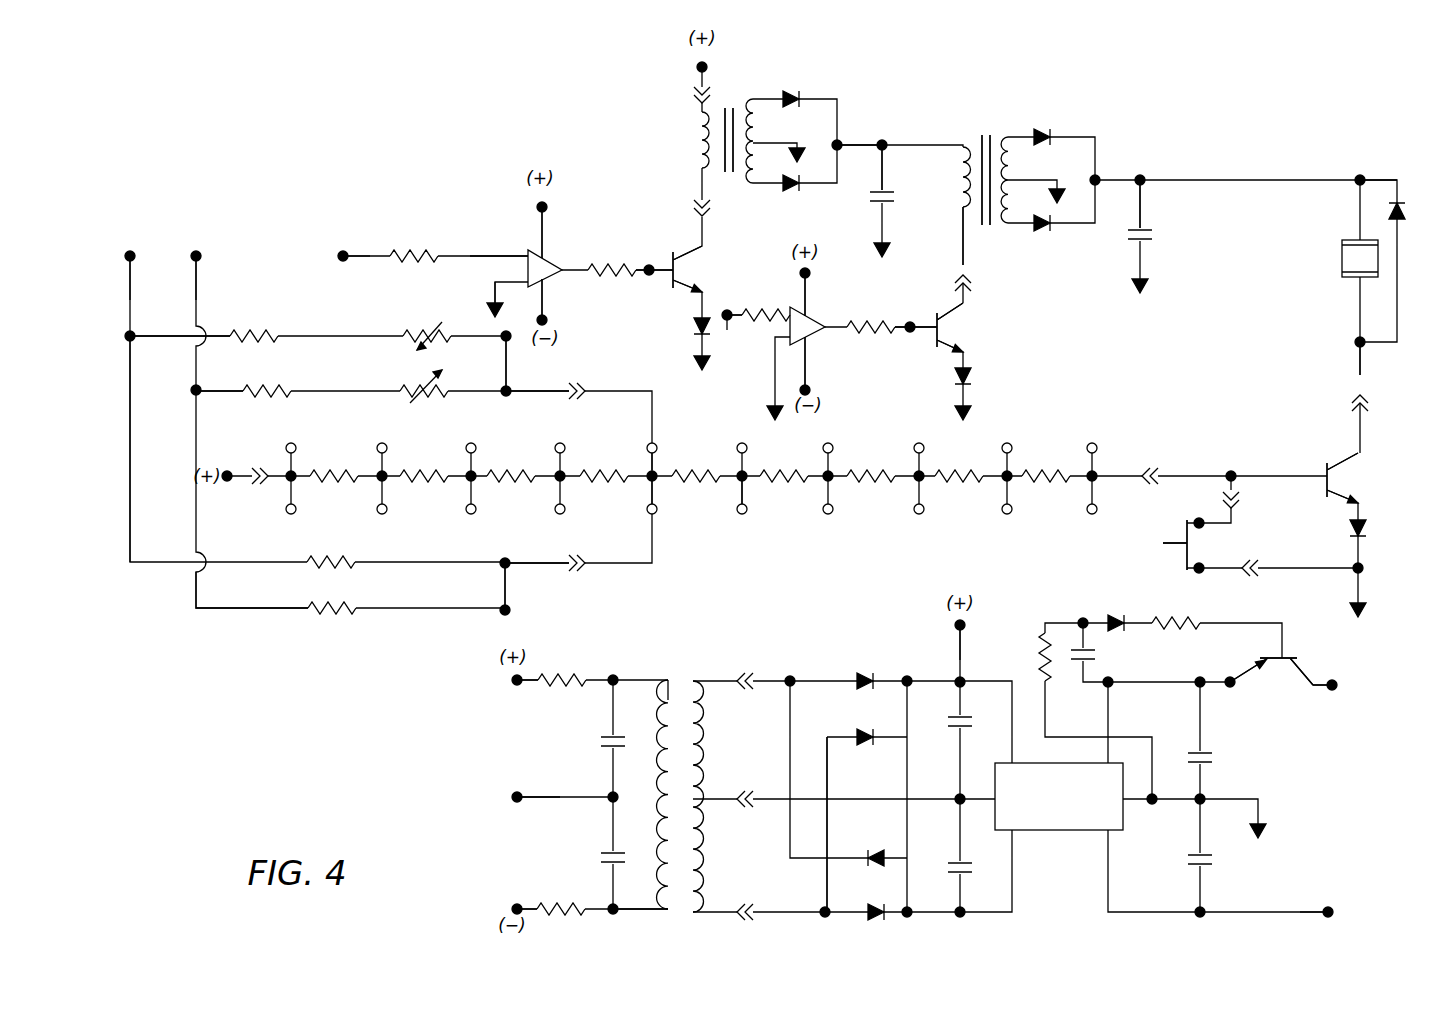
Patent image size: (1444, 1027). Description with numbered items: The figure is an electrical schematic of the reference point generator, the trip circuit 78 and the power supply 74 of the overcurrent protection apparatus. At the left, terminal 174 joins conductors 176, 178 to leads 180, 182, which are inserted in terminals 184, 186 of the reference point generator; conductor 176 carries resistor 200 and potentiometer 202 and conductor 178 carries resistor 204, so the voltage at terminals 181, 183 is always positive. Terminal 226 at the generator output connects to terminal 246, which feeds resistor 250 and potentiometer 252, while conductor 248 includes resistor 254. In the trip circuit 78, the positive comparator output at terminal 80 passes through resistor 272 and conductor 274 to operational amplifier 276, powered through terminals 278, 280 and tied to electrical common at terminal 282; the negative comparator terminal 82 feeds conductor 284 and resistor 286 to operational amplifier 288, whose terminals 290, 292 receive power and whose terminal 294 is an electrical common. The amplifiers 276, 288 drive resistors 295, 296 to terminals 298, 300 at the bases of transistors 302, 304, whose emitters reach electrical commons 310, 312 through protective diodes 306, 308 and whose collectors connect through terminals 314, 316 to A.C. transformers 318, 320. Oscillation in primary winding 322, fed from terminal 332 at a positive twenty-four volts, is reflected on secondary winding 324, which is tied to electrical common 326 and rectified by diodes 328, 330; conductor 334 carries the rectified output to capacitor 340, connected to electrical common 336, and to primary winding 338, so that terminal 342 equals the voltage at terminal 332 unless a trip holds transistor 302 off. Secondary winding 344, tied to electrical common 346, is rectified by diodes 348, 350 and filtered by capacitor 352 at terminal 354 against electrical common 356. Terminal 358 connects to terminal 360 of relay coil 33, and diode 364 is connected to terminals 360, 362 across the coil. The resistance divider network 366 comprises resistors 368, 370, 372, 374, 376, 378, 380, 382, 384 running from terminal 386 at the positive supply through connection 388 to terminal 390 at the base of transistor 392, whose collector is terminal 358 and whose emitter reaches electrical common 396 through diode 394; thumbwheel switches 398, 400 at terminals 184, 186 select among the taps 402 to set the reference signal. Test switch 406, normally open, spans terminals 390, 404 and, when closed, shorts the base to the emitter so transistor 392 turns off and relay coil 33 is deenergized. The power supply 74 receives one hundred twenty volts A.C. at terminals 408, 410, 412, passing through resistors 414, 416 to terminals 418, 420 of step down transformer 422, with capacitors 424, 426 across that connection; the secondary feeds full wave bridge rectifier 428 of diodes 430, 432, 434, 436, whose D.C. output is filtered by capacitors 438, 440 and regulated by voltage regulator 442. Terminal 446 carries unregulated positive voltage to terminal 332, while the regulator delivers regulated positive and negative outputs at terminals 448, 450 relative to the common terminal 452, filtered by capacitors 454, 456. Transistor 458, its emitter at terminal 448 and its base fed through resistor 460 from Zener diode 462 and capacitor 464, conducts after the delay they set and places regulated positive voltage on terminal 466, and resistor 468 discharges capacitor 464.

The relay coil 33 is at (1342, 254).
The power supply 74 is at (494, 722).
The trip circuit 78 is at (1112, 140).
The output terminal 80 is at (343, 250).
The terminal 82 is at (726, 305).
The terminal 174 is at (130, 251).
The conductor 176 is at (170, 336).
The conductor 178 is at (130, 382).
The lead 180 is at (540, 391).
The terminal 181 is at (504, 338).
The lead 182 is at (545, 572).
The terminal 183 is at (498, 615).
The terminal 184 is at (585, 385).
The terminal 186 is at (572, 555).
The resistor 200 is at (255, 330).
The potentiometer 202 is at (415, 330).
The resistor 204 is at (335, 560).
The terminal 226 is at (196, 251).
The terminal 246 is at (200, 388).
The conductor 248 is at (255, 607).
The resistor 250 is at (270, 385).
The potentiometer 252 is at (410, 395).
The resistor 254 is at (340, 612).
The resistor 272 is at (411, 250).
The conductor 274 is at (497, 256).
The operational amplifier 276 is at (545, 265).
The terminal 278 is at (545, 203).
The terminal 280 is at (548, 320).
The terminal 282 is at (493, 290).
The conductor 284 is at (732, 320).
The resistor 286 is at (760, 305).
The operational amplifier 288 is at (815, 320).
The terminal 290 is at (795, 270).
The terminal 292 is at (812, 390).
The terminal 294 is at (770, 415).
The resistor 295 is at (630, 278).
The resistor 296 is at (866, 330).
The terminal 298 is at (648, 262).
The terminal 300 is at (910, 322).
The transistor 302 is at (672, 287).
The transistor 304 is at (930, 328).
The diode 306 is at (695, 325).
The diode 308 is at (970, 372).
The electrical common 310 is at (695, 358).
The electrical common 312 is at (975, 403).
The terminal 314 is at (695, 205).
The terminal 316 is at (970, 275).
The A.C. transformer 318 is at (738, 180).
The A.C. transformer 320 is at (1000, 215).
The primary winding 322 is at (700, 135).
The secondary winding 324 is at (755, 100).
The electrical common 326 is at (798, 148).
The diode 328 is at (795, 185).
The diode 330 is at (795, 95).
The terminal 332 is at (695, 66).
The conductor 334 is at (862, 140).
The electrical common 336 is at (890, 255).
The primary winding 338 is at (960, 172).
The capacitor 340 is at (890, 212).
The terminal 342 is at (884, 140).
The secondary winding 344 is at (1008, 140).
The electrical common 346 is at (1057, 185).
The diode 348 is at (1043, 130).
The diode 350 is at (1045, 228).
The capacitor 352 is at (1150, 232).
The terminal 354 is at (1142, 172).
The electrical common 356 is at (1150, 289).
The terminal 358 is at (1350, 390).
The terminal 360 is at (1353, 342).
The terminal 362 is at (1360, 172).
The diode 364 is at (1398, 200).
The resistance divider network 366 is at (770, 505).
The resistor 368 is at (334, 470).
The resistor 370 is at (428, 466).
The resistor 372 is at (512, 466).
The resistor 374 is at (610, 466).
The resistor 376 is at (702, 466).
The resistor 378 is at (790, 468).
The resistor 380 is at (868, 468).
The resistor 382 is at (960, 466).
The resistor 384 is at (1048, 466).
The terminal 386 is at (229, 470).
The connection 388 is at (1152, 448).
The terminal 390 is at (1230, 465).
The transistor 392 is at (1318, 460).
The diode 394 is at (1348, 525).
The electrical common 396 is at (1350, 608).
The switch 398 is at (660, 432).
The switch 400 is at (670, 512).
The taps 402 is at (287, 511).
The terminal 404 is at (1362, 566).
The test switch 406 is at (1178, 545).
The terminal 408 is at (512, 680).
The terminal 410 is at (512, 792).
The terminal 412 is at (512, 903).
The resistor 414 is at (575, 675).
The resistor 416 is at (570, 900).
The terminal 418 is at (616, 678).
The terminal 420 is at (620, 910).
The step down transformer 422 is at (700, 915).
The capacitor 424 is at (605, 738).
The capacitor 426 is at (608, 855).
The full wave bridge rectifier 428 is at (850, 730).
The diode 430 is at (860, 670).
The diode 432 is at (872, 745).
The diode 434 is at (882, 850).
The diode 436 is at (878, 905).
The filtering capacitor 438 is at (955, 718).
The filtering capacitor 440 is at (957, 860).
The voltage regulator 442 is at (1044, 809).
The terminal 446 is at (953, 625).
The terminal 448 is at (1237, 686).
The terminal 450 is at (1328, 908).
The terminal 452 is at (1265, 830).
The filtering capacitor 454 is at (1212, 758).
The filtering capacitor 456 is at (1212, 858).
The transistor 458 is at (1300, 648).
The resistor 460 is at (1178, 618).
The Zener diode 462 is at (1112, 618).
The capacitor 464 is at (1098, 655).
The terminal 466 is at (1335, 692).
The resistor 468 is at (1040, 655).